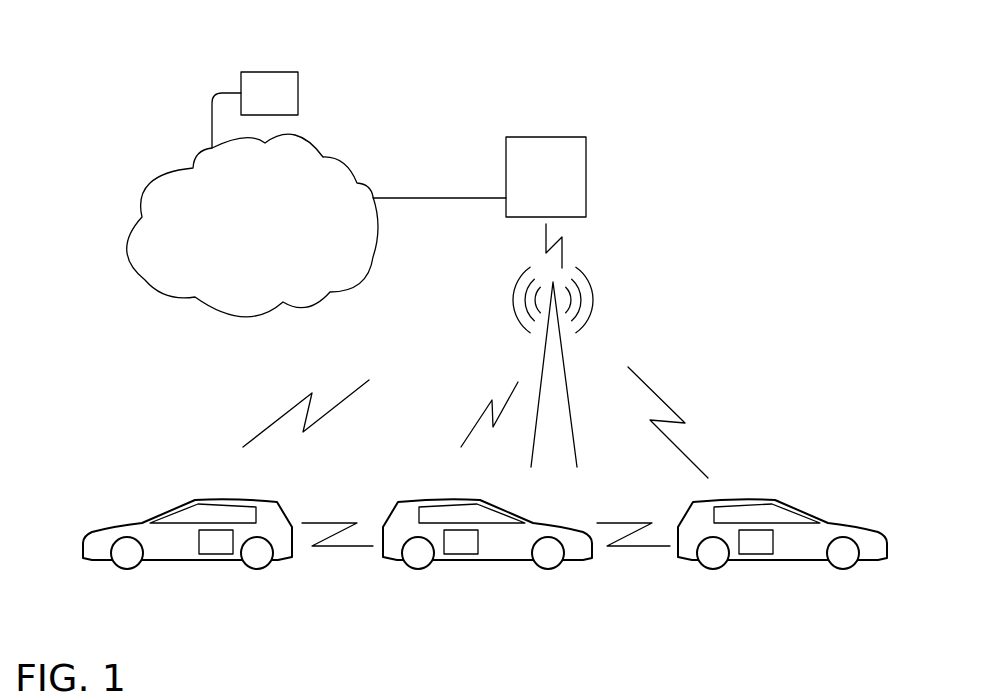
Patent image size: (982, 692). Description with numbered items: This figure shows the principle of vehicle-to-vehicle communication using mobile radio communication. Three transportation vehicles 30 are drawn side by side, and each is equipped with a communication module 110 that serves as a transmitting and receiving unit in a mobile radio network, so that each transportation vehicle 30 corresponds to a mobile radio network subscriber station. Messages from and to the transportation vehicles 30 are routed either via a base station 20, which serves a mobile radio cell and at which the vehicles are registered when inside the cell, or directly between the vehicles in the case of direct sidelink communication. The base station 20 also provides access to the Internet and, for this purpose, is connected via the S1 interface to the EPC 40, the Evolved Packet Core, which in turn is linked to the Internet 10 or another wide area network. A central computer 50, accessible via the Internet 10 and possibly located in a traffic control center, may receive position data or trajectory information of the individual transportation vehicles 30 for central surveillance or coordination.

The Internet 10 is at (319, 180).
The base station 20 is at (561, 356).
The transportation vehicle 30 is at (167, 546).
The EPC 40 is at (562, 179).
The central computer 50 is at (280, 93).
The communication module 110 is at (218, 546).